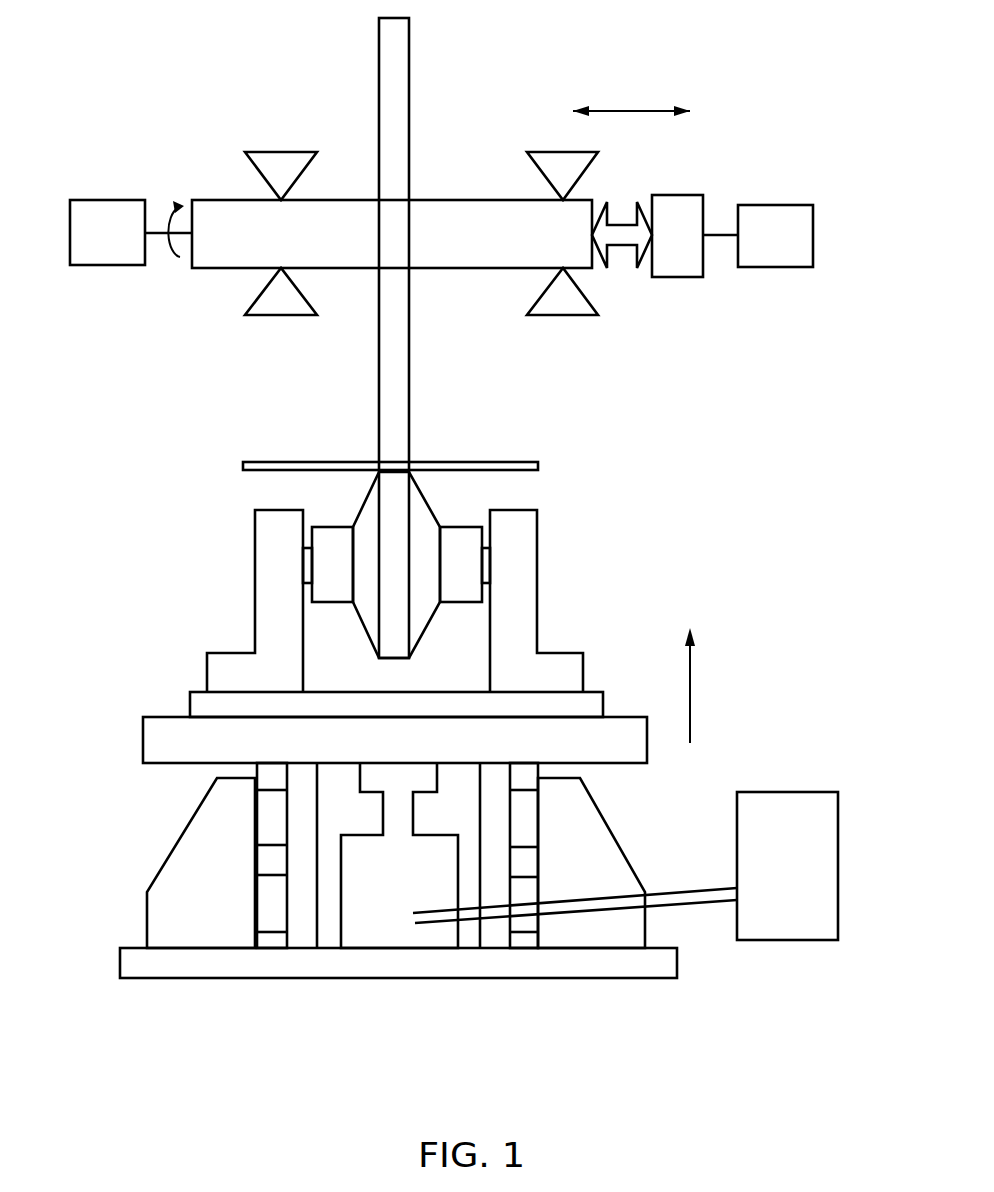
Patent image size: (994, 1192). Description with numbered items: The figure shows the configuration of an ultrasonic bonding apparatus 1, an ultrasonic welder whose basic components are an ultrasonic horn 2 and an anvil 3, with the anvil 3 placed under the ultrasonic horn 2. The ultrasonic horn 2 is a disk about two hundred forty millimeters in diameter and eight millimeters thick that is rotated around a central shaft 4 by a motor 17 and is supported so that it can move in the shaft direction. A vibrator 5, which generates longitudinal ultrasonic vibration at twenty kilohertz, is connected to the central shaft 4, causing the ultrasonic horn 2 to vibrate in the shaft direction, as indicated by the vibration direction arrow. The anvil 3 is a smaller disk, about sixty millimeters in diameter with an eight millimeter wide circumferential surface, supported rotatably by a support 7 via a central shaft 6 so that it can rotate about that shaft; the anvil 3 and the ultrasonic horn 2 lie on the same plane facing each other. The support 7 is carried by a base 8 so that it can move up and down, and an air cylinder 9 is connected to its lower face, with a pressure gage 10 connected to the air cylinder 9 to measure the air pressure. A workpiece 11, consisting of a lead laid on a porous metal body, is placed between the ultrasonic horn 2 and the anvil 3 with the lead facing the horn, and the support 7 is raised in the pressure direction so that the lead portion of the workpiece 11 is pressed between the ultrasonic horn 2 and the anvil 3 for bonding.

The ultrasonic bonding apparatus 1 is at (700, 462).
The ultrasonic horn 2 is at (405, 107).
The anvil 3 is at (392, 507).
The central shaft 4 is at (219, 262).
The vibrator 5 is at (757, 208).
The central shaft 6 is at (317, 570).
The support 7 is at (213, 676).
The base 8 is at (216, 947).
The air cylinder 9 is at (400, 947).
The pressure gage 10 is at (775, 935).
The workpiece 11 is at (487, 467).
The motor 17 is at (88, 205).